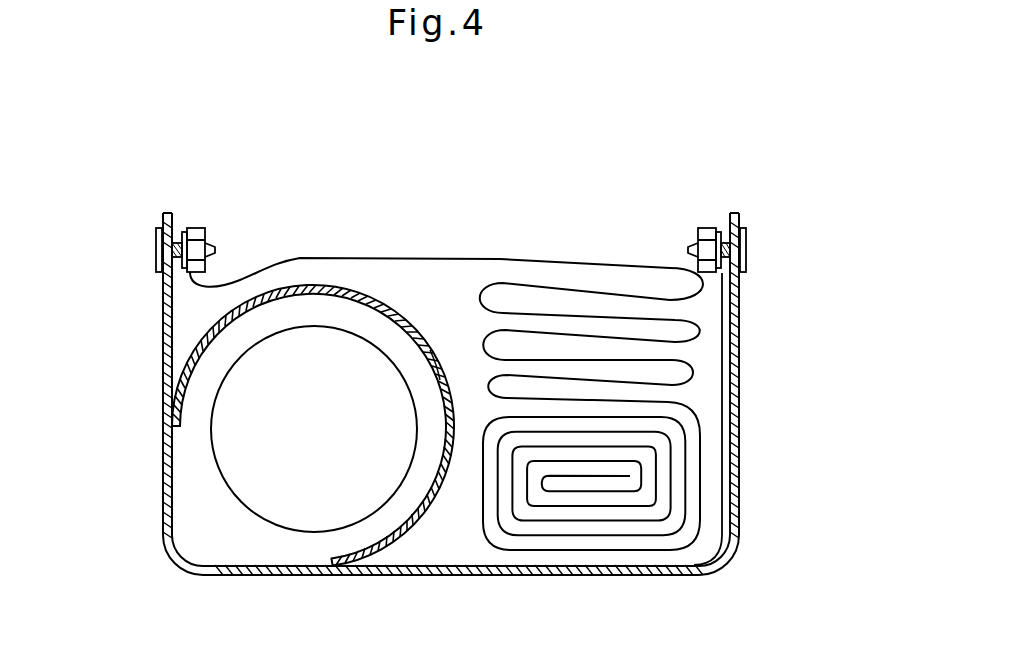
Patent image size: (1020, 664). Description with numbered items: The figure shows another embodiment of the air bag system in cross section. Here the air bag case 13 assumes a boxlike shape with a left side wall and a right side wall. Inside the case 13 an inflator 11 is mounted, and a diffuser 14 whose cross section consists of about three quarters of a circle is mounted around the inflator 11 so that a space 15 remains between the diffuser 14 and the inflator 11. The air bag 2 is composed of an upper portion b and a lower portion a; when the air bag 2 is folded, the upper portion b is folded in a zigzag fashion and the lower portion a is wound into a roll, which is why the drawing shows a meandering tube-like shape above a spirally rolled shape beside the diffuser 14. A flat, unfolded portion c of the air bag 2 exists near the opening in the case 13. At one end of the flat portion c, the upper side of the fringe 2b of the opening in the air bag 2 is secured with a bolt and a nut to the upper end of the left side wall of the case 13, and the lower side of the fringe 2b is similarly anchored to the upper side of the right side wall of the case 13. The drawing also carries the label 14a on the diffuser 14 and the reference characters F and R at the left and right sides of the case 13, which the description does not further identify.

The air bag 2 is at (490, 370).
The fringe of the opening in the air bag 2b is at (187, 227).
The lower portion of the air bag a is at (700, 492).
The upper portion of the air bag b is at (697, 306).
The flat, unfolded portion c is at (553, 258).
The inflator 11 is at (332, 442).
The air bag case 13 is at (737, 426).
The diffuser 14 is at (342, 287).
The shroud ring flange 14a is at (291, 285).
The space 15 is at (403, 337).
The front side F is at (134, 392).
The rear side R is at (808, 402).